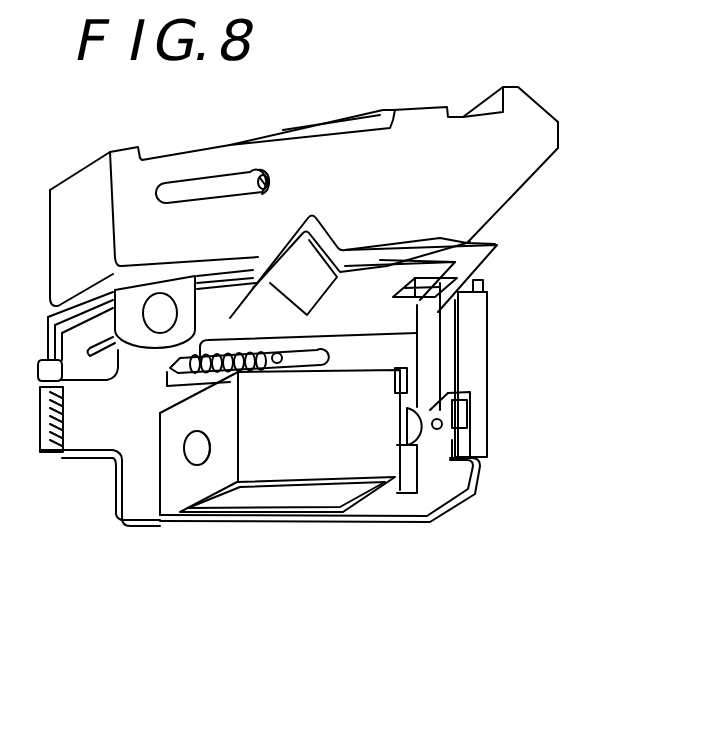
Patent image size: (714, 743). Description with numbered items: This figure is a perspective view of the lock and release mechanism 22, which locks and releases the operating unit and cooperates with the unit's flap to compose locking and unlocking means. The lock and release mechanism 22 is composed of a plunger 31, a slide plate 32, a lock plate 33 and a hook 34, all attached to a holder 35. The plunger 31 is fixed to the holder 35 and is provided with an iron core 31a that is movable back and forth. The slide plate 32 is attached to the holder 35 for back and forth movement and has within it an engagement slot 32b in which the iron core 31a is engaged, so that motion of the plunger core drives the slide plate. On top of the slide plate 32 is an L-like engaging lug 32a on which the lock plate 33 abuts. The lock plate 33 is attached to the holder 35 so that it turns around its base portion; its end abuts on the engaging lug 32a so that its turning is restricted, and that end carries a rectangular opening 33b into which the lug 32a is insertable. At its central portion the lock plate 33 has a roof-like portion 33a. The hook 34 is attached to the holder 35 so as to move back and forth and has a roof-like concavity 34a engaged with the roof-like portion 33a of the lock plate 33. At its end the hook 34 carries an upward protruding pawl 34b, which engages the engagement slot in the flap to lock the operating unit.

The lock and release mechanism 22 is at (283, 108).
The plunger 31 is at (303, 470).
The iron core 31a is at (443, 507).
The slide plate 32 is at (477, 365).
The L-like engaging lug 32a is at (420, 308).
The engagement slot 32b is at (462, 412).
The lock plate 33 is at (222, 316).
The roof-like portion 33a is at (290, 263).
The rectangular opening 33b is at (492, 250).
The hook 34 is at (503, 185).
The roof-like concavity 34a is at (322, 230).
The upward protruding pawl 34b is at (522, 100).
The holder 35 is at (143, 517).